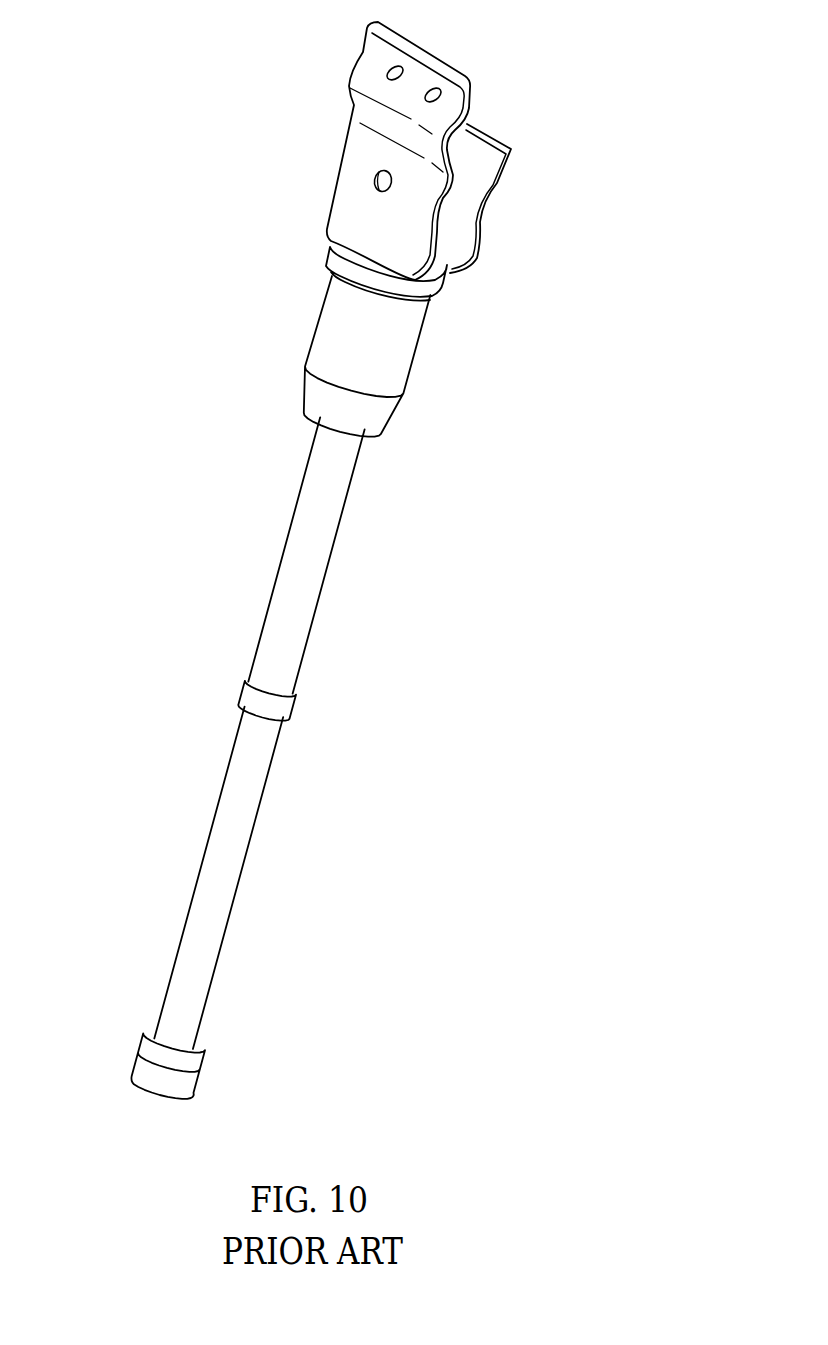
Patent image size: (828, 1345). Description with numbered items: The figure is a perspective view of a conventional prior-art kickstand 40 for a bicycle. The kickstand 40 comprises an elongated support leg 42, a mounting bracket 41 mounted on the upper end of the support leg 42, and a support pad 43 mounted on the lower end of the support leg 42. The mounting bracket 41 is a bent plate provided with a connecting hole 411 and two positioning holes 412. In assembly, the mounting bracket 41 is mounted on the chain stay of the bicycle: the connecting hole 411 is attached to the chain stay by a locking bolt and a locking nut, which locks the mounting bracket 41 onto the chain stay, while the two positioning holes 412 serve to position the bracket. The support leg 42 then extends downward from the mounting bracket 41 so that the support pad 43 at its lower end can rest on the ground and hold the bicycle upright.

The kickstand 40 is at (243, 534).
The mounting bracket 41 is at (466, 225).
The connecting hole 411 is at (375, 180).
The positioning holes 412 is at (423, 92).
The support leg 42 is at (302, 613).
The support pad 43 is at (167, 1083).